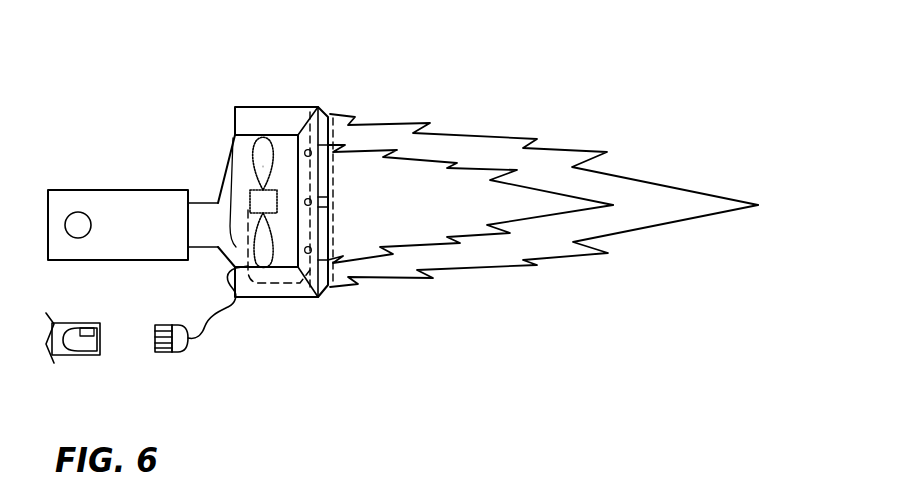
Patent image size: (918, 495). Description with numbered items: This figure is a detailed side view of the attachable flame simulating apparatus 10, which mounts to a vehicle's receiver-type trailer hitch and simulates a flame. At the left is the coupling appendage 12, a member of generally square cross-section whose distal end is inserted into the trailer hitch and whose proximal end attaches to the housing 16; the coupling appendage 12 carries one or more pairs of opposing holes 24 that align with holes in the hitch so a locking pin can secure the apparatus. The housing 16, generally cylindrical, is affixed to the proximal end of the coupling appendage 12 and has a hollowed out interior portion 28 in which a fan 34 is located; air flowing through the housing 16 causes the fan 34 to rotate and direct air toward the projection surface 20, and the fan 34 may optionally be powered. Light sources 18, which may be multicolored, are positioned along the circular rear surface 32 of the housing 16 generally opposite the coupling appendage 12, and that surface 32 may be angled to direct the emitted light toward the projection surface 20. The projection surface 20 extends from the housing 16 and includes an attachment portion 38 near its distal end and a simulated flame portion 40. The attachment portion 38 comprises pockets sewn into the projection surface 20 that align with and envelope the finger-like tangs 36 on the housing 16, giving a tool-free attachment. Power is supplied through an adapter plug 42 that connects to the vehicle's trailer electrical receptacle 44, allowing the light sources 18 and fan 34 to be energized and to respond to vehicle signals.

The attachable flame simulating apparatus 10 is at (52, 65).
The coupling appendage 12 is at (155, 218).
The housing 16 is at (263, 107).
The light sources 18 is at (340, 296).
The projection surface 20 is at (547, 136).
The opposing holes 24 is at (82, 238).
The hollowed out interior portion 28 is at (287, 262).
The circular rear surface 32 is at (310, 112).
The fan 34 is at (263, 166).
The finger-like tangs 36 is at (325, 152).
The attachment portion 38 is at (335, 205).
The simulated flame portion 40 is at (558, 211).
The adapter plug 42 is at (193, 341).
The trailer electrical receptacle 44 is at (75, 340).